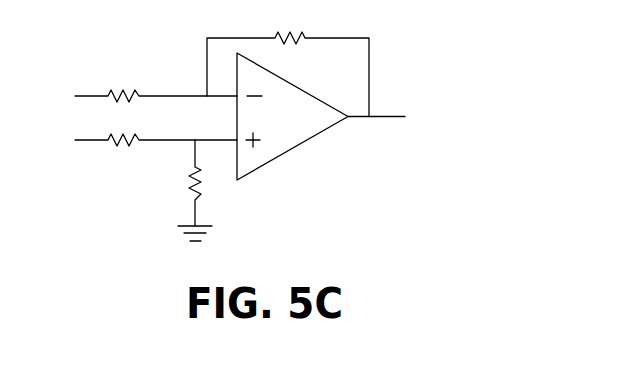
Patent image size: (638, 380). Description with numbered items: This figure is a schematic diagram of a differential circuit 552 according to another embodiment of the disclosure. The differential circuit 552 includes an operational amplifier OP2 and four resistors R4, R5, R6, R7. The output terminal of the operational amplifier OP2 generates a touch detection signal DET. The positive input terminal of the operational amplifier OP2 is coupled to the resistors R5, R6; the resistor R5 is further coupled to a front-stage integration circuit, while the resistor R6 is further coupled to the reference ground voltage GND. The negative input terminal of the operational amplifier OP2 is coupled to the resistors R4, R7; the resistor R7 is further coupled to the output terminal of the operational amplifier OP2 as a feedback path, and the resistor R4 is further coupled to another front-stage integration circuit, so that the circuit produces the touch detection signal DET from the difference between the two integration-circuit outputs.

The detector circuit 552 is at (502, 271).
The operational amplifier OP2 is at (302, 140).
The resistor R4 is at (156, 76).
The resistor R5 is at (156, 160).
The resistor R6 is at (178, 183).
The resistor R7 is at (288, 60).
The reference ground voltage GND is at (197, 251).
The touch detection signal DET is at (400, 120).